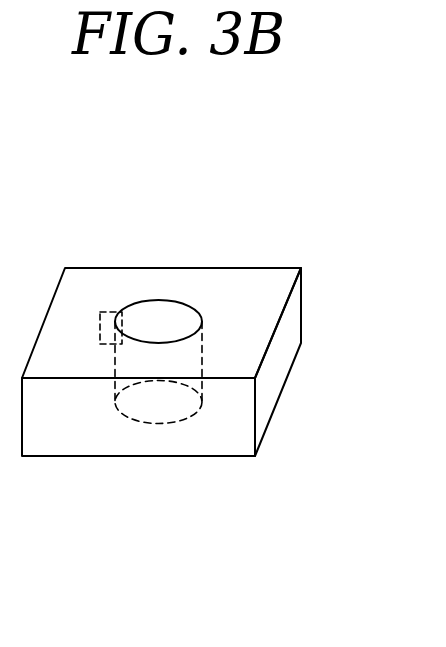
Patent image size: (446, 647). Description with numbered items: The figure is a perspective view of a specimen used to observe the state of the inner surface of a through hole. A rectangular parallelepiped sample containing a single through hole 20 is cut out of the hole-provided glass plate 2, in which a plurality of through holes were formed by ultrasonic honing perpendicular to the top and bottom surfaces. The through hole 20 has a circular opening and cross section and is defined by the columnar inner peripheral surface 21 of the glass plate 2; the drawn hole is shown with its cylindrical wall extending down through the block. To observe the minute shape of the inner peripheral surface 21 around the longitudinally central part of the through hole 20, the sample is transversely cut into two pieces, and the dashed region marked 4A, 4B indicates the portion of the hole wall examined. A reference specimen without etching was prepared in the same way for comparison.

The hole-provided glass plate 2 is at (270, 390).
The through hole 20 is at (176, 326).
The inner peripheral surface 21 is at (137, 324).
The light detector 4A is at (77, 275).
The light detector 4B is at (110, 312).